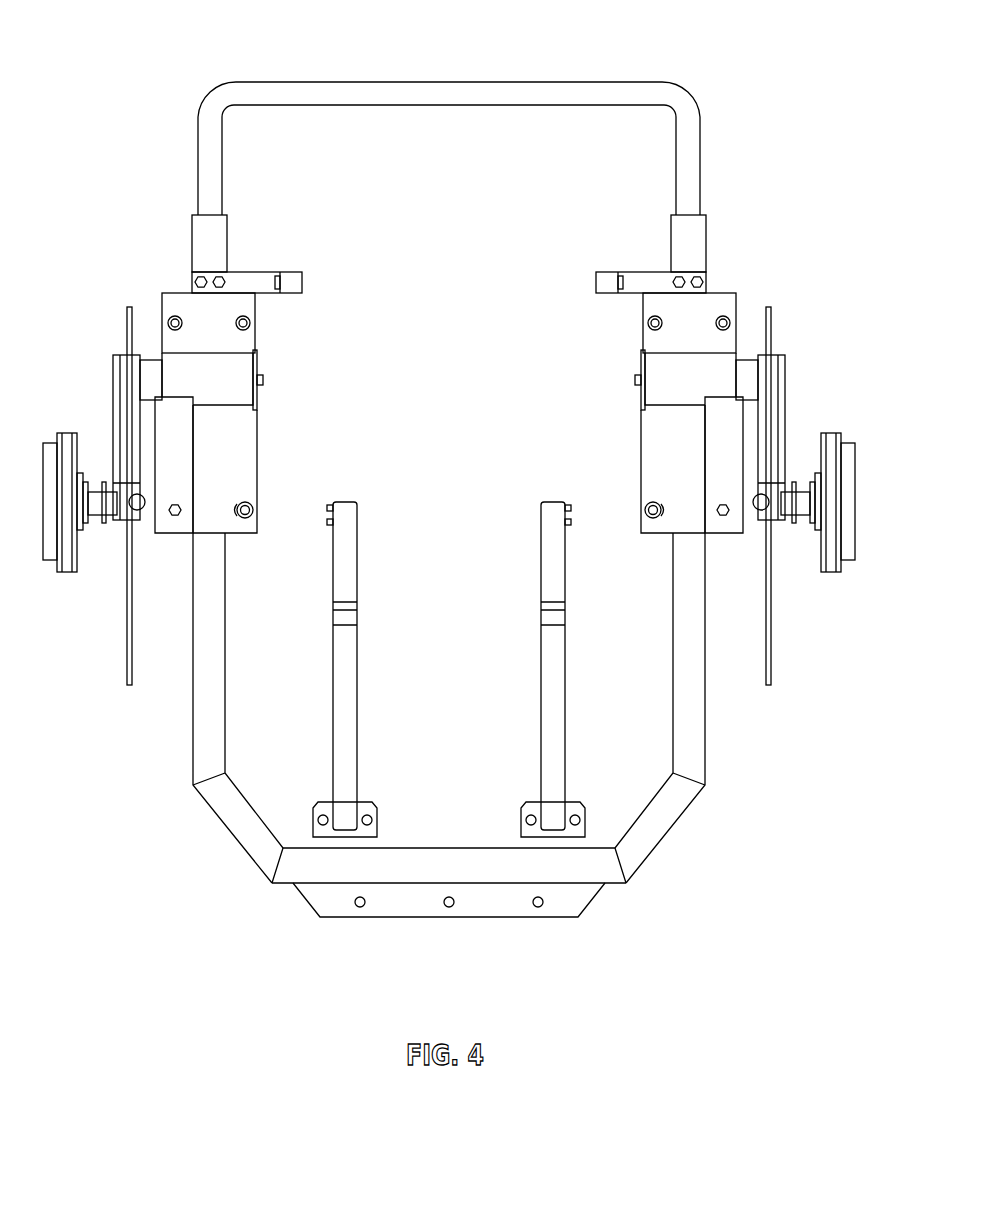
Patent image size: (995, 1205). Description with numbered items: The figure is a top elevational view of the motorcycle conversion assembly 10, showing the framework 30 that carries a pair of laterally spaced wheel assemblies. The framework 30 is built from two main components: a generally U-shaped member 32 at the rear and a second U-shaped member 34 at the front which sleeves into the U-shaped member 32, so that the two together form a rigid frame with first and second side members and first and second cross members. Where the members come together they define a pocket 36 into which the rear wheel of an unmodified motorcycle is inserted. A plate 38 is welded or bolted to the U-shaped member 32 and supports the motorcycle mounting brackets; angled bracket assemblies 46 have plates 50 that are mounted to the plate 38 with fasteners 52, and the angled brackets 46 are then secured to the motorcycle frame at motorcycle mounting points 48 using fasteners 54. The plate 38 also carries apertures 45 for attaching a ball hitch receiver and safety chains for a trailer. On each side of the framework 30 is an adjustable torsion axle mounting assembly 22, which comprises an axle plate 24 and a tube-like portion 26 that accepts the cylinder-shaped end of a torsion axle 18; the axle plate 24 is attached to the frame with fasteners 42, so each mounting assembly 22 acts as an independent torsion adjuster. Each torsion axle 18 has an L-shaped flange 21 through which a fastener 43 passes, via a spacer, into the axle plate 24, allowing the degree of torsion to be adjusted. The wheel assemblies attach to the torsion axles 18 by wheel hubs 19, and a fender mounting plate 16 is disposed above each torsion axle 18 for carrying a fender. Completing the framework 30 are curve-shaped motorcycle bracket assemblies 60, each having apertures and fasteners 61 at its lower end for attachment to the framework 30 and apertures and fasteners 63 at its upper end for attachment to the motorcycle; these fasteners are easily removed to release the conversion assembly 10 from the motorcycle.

The motorcycle conversion assembly 10 is at (148, 100).
The fender mounting plate 16 is at (127, 628).
The torsion axle 18 is at (104, 548).
The wheel hub 19 is at (65, 432).
The L-shaped flange 21 is at (180, 455).
The torsion axle mounting assembly 22 is at (140, 298).
The axle plate 24 is at (242, 488).
The tube-like portion 26 is at (203, 365).
The framework 30 is at (203, 861).
The U-shaped member 32 is at (662, 828).
The U-shaped member 34 is at (612, 82).
The pocket 36 is at (432, 148).
The plate 38 is at (437, 835).
The fastener 42 is at (250, 516).
The fastener 43 is at (173, 516).
The aperture 45 is at (535, 907).
The angled bracket assembly 46 is at (357, 712).
The motorcycle mounting point 48 is at (350, 515).
The plate 50 is at (377, 808).
The fastener 52 is at (366, 815).
The fastener 54 is at (327, 522).
The curve-shaped motorcycle bracket assembly 60 is at (262, 272).
The apertures and fasteners 61 is at (219, 270).
The apertures and fasteners 63 is at (282, 290).